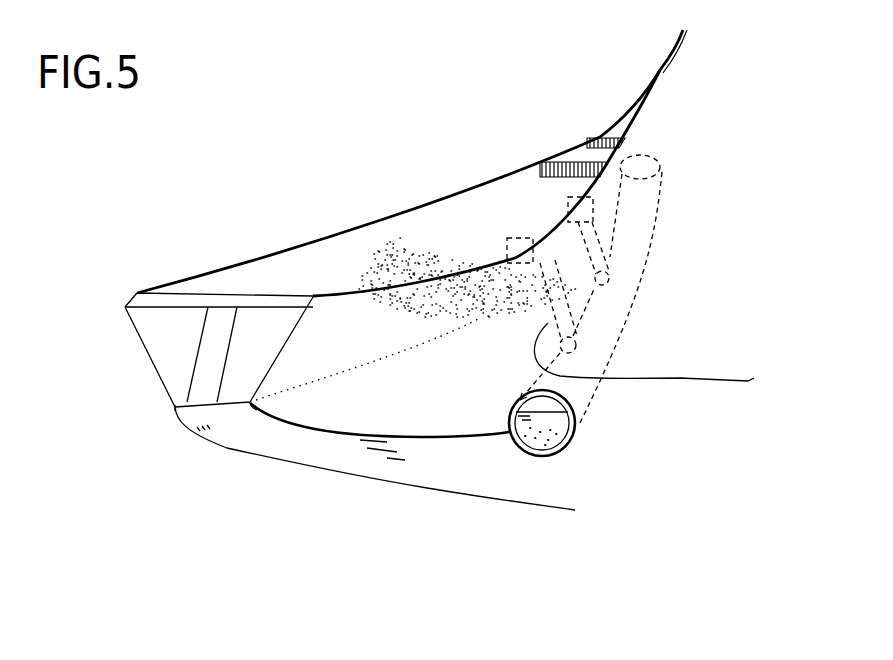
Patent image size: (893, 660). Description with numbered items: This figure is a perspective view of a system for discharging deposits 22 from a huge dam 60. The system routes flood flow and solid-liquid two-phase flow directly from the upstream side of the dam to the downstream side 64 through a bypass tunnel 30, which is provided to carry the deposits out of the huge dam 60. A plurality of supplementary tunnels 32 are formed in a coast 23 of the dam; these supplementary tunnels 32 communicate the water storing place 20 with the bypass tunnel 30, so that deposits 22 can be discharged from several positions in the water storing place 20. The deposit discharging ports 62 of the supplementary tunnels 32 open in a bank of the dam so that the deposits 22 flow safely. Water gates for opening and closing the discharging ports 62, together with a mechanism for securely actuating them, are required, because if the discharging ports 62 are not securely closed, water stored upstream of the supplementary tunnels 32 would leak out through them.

The water storing place 20 is at (497, 200).
The deposits 22 is at (428, 263).
The coast of the dam 23 is at (583, 180).
The bypass tunnel 30 is at (628, 326).
The supplementary tunnels 32 is at (611, 248).
The huge dam 60 is at (183, 302).
The deposit discharging ports 62 is at (585, 216).
The downstream side 64 is at (357, 465).